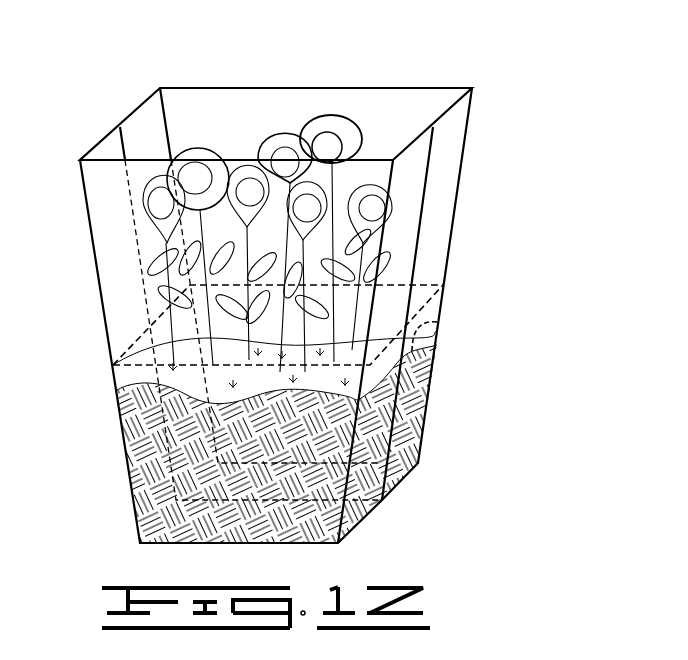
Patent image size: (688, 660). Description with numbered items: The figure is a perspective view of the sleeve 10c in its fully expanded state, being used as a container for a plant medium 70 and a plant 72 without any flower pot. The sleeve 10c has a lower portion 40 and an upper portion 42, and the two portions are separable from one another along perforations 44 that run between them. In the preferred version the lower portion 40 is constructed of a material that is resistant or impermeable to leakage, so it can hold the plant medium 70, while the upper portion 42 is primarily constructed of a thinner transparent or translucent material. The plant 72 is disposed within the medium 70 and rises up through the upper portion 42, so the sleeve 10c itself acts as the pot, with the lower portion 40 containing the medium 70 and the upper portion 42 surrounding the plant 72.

The sleeve 10c is at (470, 218).
The upper portion 42 is at (467, 140).
The perforations 44 is at (418, 310).
The plant medium 70 is at (437, 322).
The lower portion 40 is at (427, 407).
The plant 72 is at (333, 110).